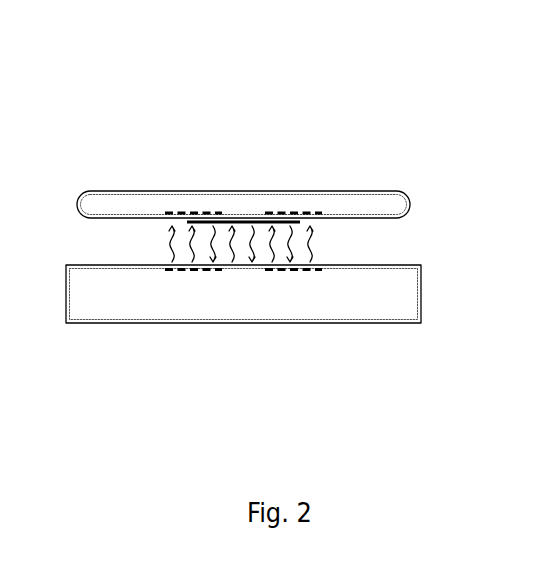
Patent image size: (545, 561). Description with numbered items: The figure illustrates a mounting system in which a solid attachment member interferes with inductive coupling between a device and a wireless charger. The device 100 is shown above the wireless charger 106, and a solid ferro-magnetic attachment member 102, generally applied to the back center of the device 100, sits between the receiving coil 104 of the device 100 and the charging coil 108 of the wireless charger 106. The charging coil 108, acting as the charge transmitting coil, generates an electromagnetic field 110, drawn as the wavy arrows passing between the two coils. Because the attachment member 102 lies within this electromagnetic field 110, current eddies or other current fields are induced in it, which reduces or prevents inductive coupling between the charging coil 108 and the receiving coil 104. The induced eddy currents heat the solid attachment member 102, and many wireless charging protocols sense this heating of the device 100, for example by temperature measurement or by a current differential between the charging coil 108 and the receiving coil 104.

The device 100 is at (193, 192).
The solid ferro-magnetic attachment member 102 is at (293, 219).
The receiving coil 104 is at (237, 212).
The wireless charger 106 is at (213, 315).
The charging coil 108 is at (284, 271).
The electromagnetic field 110 is at (312, 250).